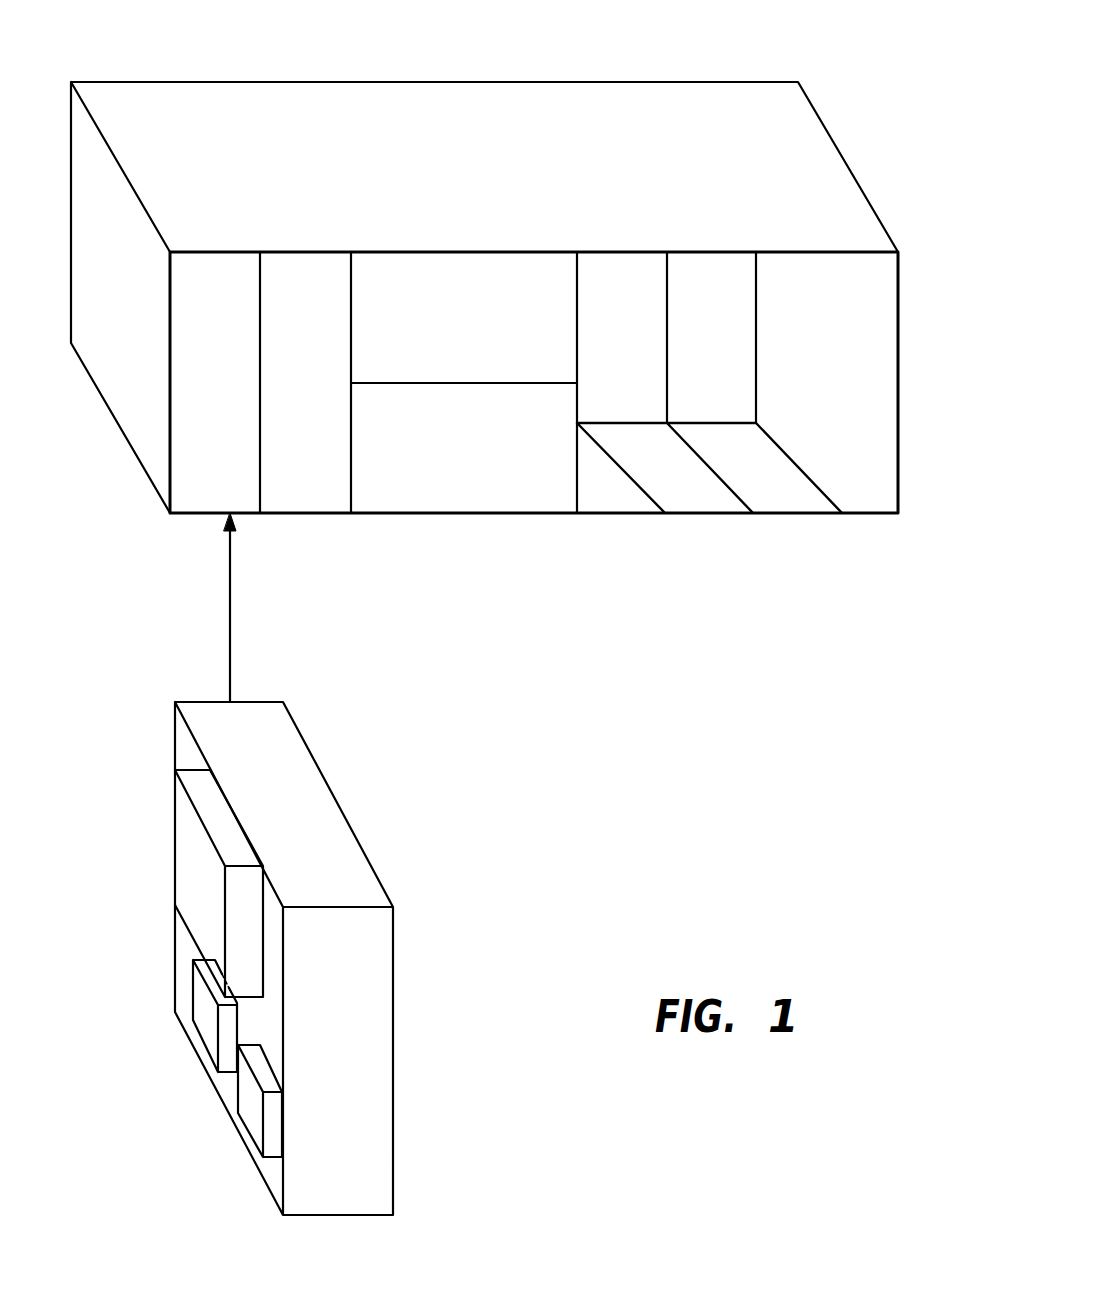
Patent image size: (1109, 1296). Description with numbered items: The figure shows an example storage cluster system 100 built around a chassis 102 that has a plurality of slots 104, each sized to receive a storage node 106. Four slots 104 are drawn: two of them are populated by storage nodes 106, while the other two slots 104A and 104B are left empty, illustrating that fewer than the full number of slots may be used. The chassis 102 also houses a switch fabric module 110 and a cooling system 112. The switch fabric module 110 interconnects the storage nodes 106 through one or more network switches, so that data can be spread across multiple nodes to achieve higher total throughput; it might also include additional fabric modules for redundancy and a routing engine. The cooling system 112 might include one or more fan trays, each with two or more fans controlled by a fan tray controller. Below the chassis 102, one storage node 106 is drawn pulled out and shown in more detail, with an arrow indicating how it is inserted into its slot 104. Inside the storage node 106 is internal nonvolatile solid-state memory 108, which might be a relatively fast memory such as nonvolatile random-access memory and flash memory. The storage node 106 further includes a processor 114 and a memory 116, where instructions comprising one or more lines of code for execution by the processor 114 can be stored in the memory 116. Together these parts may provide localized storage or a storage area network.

The storage cluster system 100 is at (777, 53).
The chassis 102 is at (825, 127).
The slots 104 is at (714, 252).
The empty slot 104A is at (647, 351).
The empty slot 104B is at (735, 351).
The storage node 106 is at (232, 395).
The internal nonvolatile solid-state memory 108 is at (200, 845).
The switch fabric module 110 is at (480, 364).
The cooling system 112 is at (480, 494).
The processor 114 is at (198, 1022).
The memory 116 is at (255, 1117).